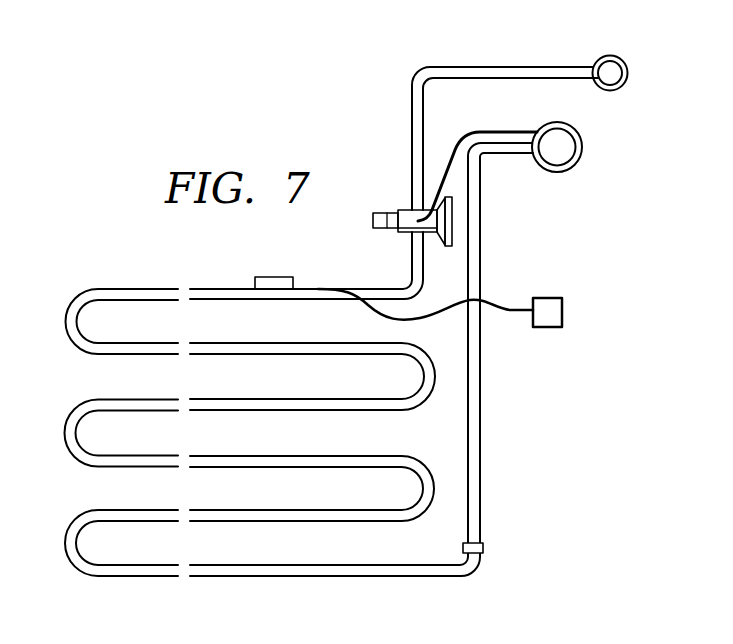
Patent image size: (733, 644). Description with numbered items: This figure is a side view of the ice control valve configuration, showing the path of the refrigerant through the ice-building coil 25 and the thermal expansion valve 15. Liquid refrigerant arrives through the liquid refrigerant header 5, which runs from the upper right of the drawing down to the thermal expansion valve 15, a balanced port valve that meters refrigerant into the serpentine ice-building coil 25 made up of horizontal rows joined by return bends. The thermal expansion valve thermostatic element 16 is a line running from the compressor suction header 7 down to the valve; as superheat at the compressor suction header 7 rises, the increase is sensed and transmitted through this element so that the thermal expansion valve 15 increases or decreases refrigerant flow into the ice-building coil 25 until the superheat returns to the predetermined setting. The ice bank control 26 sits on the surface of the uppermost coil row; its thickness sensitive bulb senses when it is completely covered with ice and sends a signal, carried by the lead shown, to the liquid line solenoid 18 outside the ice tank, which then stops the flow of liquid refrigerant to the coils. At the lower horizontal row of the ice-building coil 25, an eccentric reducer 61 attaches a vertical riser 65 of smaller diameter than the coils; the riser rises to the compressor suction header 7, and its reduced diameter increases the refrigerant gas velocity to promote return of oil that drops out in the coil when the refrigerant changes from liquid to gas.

The liquid refrigerant header 5 is at (608, 56).
The compressor suction header 7 is at (558, 172).
The thermal expansion valve 15 is at (405, 210).
The thermal expansion valve thermostatic element 16 is at (496, 131).
The liquid line solenoid 18 is at (548, 327).
The ice-building coil 25 is at (63, 433).
The ice bank control 26 is at (267, 276).
The eccentric reducer 61 is at (483, 548).
The vertical riser 65 is at (481, 434).